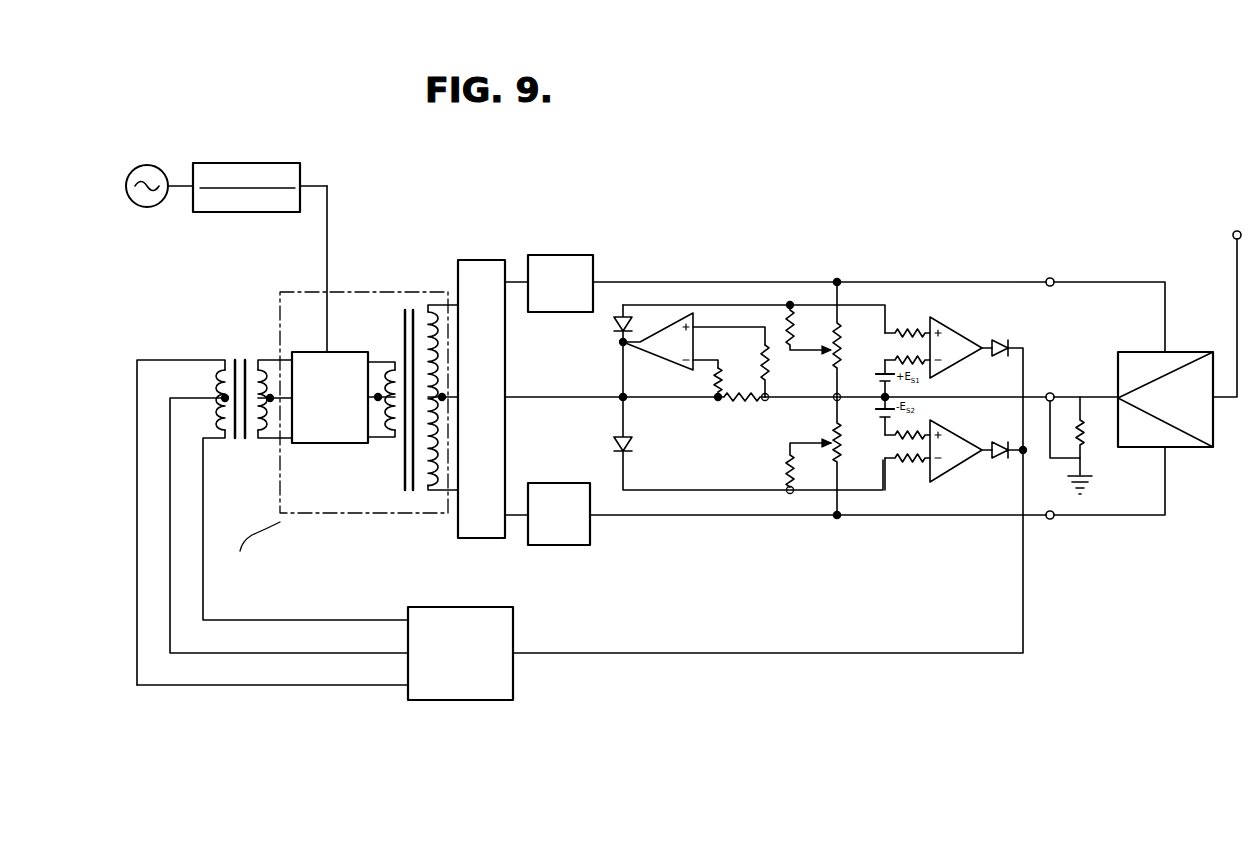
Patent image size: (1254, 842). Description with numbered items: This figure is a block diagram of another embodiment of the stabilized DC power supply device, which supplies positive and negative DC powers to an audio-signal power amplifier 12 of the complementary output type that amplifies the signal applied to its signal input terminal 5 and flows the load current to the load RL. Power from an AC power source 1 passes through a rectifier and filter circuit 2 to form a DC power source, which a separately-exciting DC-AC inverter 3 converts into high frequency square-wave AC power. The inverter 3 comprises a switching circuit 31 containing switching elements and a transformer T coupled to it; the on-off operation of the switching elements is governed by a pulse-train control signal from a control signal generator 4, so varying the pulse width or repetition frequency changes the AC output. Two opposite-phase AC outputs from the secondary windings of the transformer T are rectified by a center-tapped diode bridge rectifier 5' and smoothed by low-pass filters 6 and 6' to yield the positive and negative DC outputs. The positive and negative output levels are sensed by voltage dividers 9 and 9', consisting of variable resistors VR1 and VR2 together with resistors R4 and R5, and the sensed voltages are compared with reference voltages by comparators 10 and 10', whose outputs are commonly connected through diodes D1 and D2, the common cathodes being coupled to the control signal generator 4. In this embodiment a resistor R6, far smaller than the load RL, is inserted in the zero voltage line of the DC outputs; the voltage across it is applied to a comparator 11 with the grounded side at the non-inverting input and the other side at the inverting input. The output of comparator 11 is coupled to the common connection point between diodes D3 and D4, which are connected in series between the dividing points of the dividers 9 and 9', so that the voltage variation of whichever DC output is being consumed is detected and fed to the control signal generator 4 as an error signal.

The AC power source 1 is at (148, 165).
The rectifier and filter circuit 2 is at (262, 163).
The DC-AC inverter 3 is at (312, 488).
The switching circuit 31 is at (312, 443).
The control signal generator 4 is at (478, 700).
The output terminal 5 is at (1227, 305).
The rectifier 5' is at (481, 384).
The low-pass filter 6 is at (549, 272).
The low-pass filter 6' is at (547, 530).
The voltage divider 9 is at (833, 341).
The voltage divider 9' is at (831, 456).
The voltage comparator 10 is at (961, 339).
The comparator 10' is at (961, 458).
The comparator 11 is at (670, 365).
The audio-signal power amplifier 12 is at (1182, 447).
The transformer T is at (402, 484).
The diode D1 is at (768, 485).
The diode D2 is at (1008, 439).
The diode D3 is at (609, 351).
The diode D4 is at (734, 443).
The resistor R4 is at (808, 328).
The resistor R5 is at (790, 466).
The resistor R6 is at (741, 385).
The variable resistor VR1 is at (816, 368).
The variable resistor VR2 is at (814, 428).
The load RL is at (1085, 445).